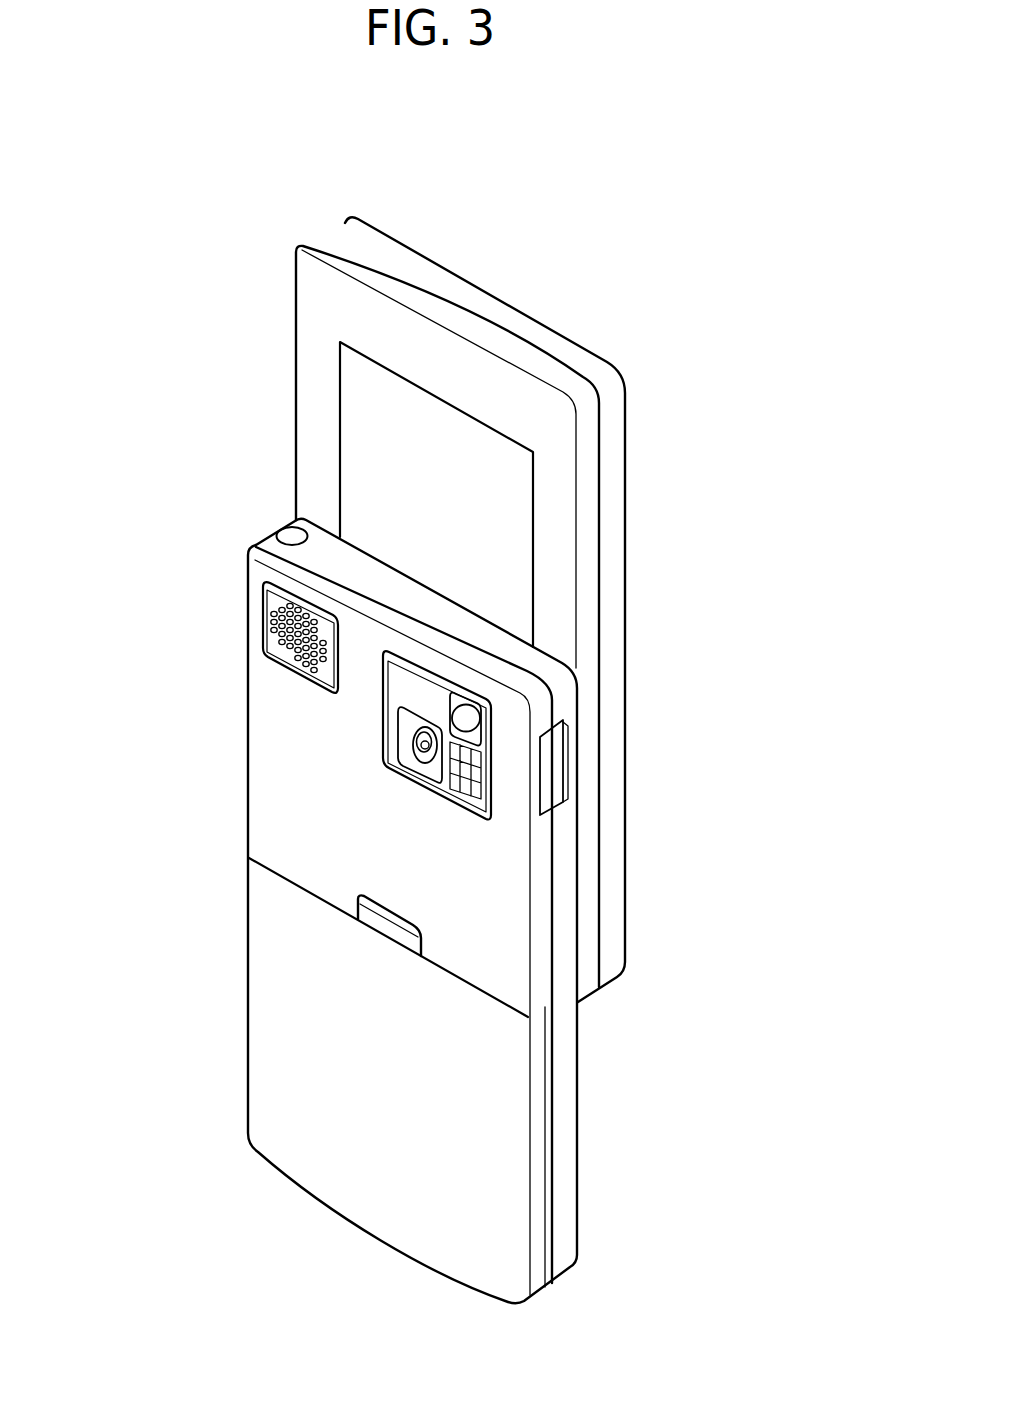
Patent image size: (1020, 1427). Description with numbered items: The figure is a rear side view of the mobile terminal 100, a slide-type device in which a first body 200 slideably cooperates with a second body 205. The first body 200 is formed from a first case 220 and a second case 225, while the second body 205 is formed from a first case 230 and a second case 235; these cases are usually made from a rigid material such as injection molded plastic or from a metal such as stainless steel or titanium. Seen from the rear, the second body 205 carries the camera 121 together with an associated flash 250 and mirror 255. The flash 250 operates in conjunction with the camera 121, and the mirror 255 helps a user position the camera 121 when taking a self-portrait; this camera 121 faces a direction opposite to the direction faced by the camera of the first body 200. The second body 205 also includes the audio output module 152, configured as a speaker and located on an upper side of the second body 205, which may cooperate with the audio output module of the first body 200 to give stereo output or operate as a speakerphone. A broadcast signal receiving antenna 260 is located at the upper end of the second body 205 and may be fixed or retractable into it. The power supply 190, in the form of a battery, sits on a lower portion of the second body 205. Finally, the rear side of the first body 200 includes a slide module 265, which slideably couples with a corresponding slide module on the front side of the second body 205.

The mobile terminal 100 is at (604, 252).
The first body 200 is at (254, 385).
The second body 205 is at (224, 752).
The first case 220 is at (346, 229).
The second case 225 is at (328, 246).
The slide module 265 is at (342, 470).
The broadcast signal receiving antenna 260 is at (289, 533).
The audio output module 152 is at (272, 630).
The flash 250 is at (467, 779).
The mirror 255 is at (468, 716).
The camera 121 is at (425, 745).
The power supply 190 is at (268, 962).
The second case 235 is at (540, 967).
The first case 230 is at (567, 1035).